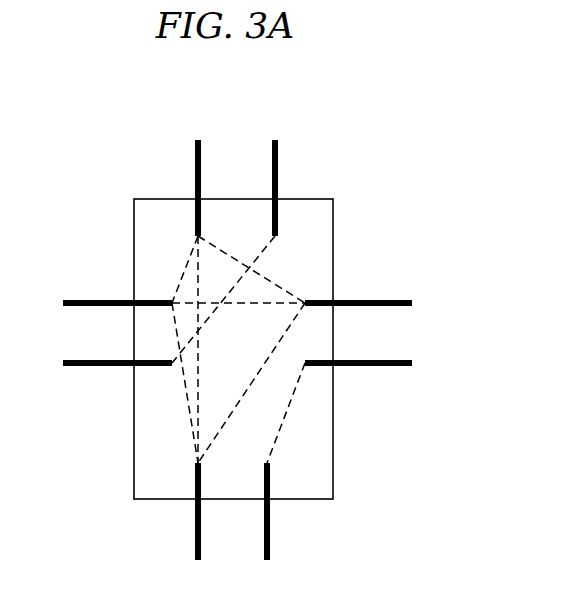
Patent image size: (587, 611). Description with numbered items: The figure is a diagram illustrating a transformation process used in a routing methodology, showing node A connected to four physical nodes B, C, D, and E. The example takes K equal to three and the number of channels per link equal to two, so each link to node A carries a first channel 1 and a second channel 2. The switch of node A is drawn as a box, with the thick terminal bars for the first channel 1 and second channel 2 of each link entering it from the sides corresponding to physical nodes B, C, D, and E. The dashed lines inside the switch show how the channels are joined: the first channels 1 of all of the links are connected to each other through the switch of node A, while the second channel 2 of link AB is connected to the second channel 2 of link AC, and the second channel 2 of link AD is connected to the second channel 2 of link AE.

The first channel 1 is at (237, 350).
The second channel 2 is at (237, 350).
The node A is at (172, 511).
The physical node B is at (111, 333).
The physical node C is at (236, 179).
The physical node D is at (363, 333).
The physical node E is at (247, 518).